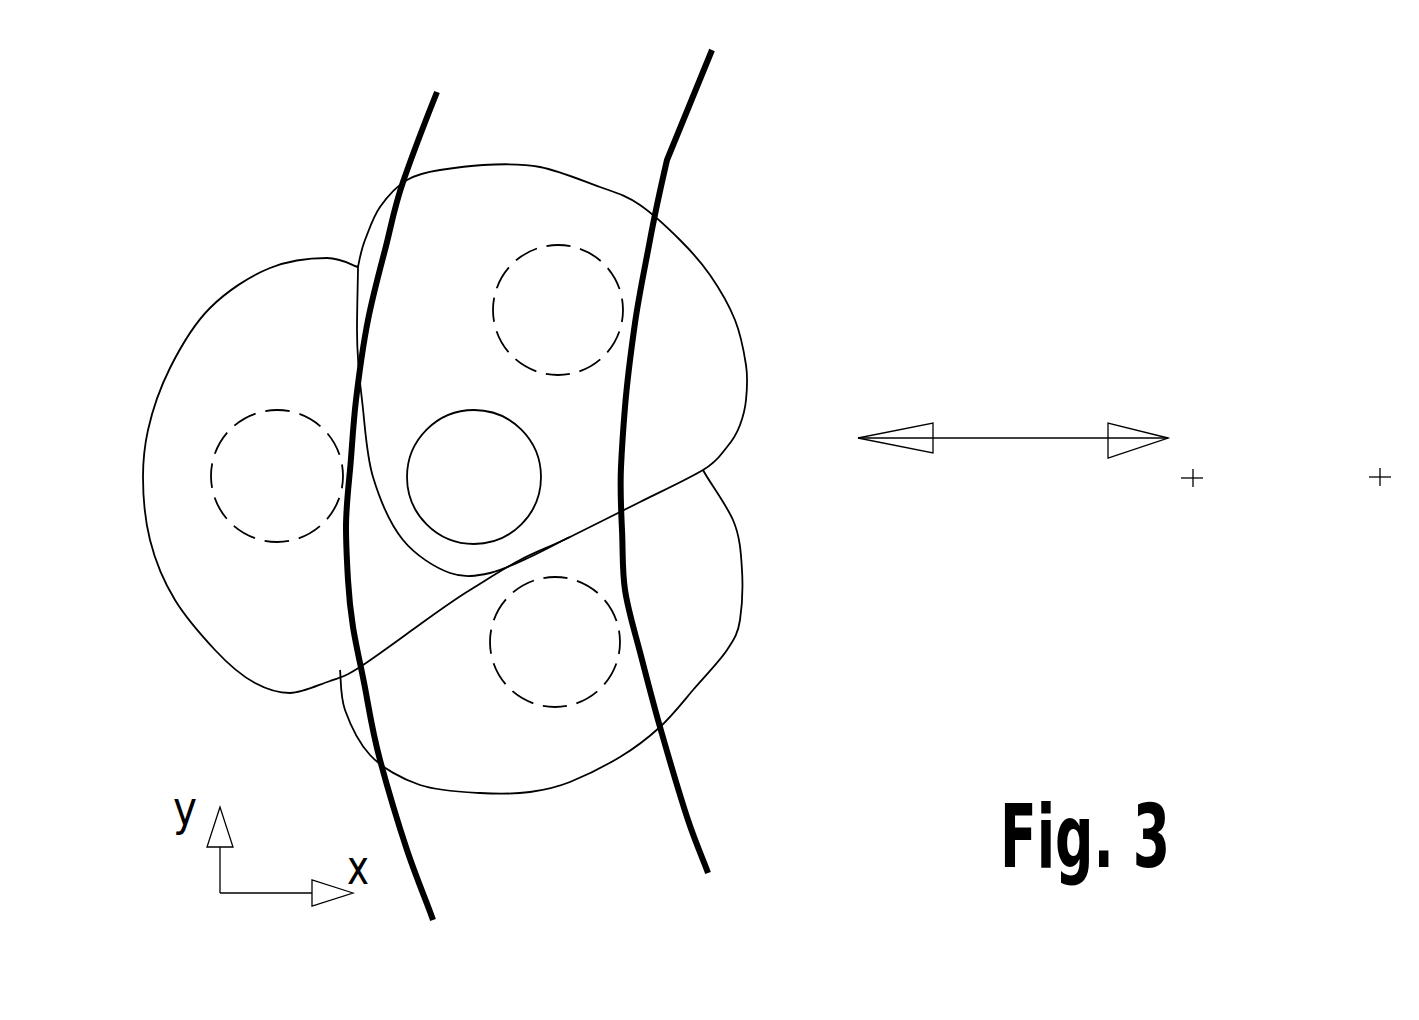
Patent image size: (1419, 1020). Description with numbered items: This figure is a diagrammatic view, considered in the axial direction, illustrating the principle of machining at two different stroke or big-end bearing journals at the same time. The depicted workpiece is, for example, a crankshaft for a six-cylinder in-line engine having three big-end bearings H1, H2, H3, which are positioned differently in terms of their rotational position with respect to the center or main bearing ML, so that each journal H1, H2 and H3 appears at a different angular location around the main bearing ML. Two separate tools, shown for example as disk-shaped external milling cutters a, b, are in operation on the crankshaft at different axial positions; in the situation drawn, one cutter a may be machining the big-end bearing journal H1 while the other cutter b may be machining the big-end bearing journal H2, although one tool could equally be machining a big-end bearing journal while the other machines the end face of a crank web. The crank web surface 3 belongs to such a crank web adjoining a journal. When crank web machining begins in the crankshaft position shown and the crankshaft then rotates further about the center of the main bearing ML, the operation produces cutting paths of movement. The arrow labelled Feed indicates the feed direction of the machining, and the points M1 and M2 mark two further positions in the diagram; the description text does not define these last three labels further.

The crank web surface 3 is at (445, 428).
The big-end bearing journal H1 is at (558, 310).
The big-end bearing journal H2 is at (277, 476).
The big-end bearing H3 is at (555, 642).
The main bearing ML is at (474, 477).
The disk-shaped external milling cutter a is at (423, 888).
The disk-shaped external milling cutter b is at (705, 857).
The first measuring point M1 is at (1381, 478).
The second measuring point M2 is at (1193, 478).
The feed direction arrow Feed is at (982, 440).